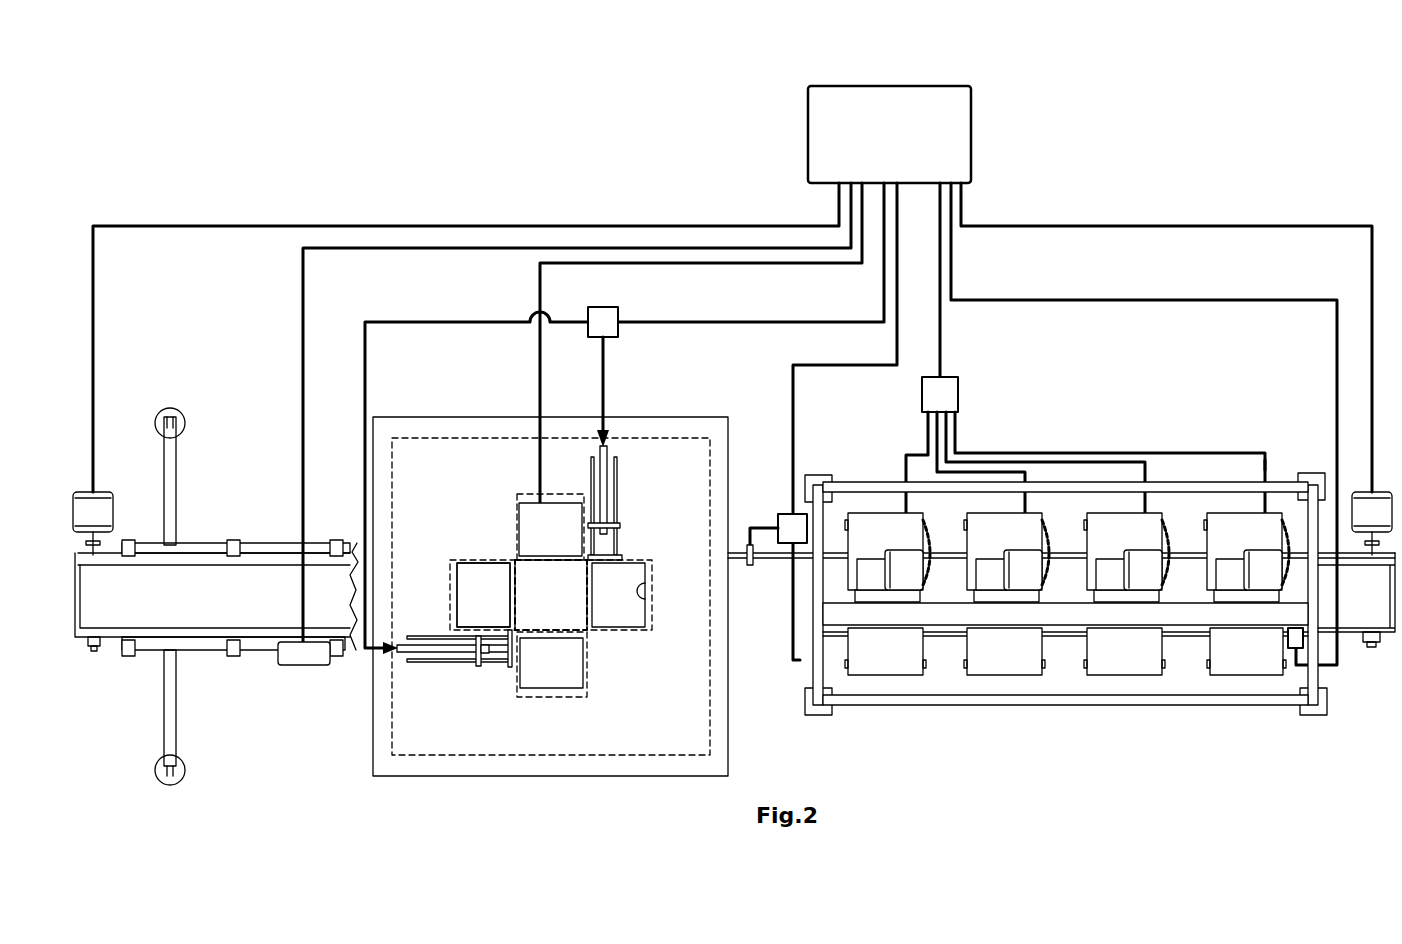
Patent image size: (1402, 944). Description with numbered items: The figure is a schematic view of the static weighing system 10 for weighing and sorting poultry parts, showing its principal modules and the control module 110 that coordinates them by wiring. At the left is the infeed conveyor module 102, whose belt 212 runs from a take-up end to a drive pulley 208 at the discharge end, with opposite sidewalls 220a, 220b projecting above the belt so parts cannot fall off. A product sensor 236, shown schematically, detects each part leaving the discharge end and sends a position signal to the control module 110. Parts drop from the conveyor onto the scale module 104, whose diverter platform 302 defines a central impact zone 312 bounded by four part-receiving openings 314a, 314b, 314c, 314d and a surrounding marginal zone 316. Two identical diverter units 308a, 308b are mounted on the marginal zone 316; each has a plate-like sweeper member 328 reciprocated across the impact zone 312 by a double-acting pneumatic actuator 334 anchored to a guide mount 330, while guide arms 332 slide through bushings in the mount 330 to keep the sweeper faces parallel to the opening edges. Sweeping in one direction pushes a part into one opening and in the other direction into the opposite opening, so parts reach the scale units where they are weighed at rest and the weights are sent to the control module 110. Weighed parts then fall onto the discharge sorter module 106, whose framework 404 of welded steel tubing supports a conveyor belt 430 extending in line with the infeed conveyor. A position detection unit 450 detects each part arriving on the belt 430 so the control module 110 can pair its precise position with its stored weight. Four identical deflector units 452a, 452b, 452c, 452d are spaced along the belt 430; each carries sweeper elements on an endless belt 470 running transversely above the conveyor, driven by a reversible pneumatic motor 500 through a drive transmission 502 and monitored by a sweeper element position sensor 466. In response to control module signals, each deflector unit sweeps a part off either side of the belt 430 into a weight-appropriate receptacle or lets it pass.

The cartridge processing system 10 is at (1022, 100).
The control module 110 is at (918, 84).
The infeed conveyor module 102 is at (213, 596).
The scale module 104 is at (526, 598).
The discharge sorter module 106 is at (1061, 573).
The drive pulley 208 is at (92, 650).
The belt 212 is at (200, 612).
The sidewall 220a is at (197, 550).
The sidewall 220b is at (148, 637).
The product sensor 236 is at (302, 665).
The diverter platform 302 is at (588, 735).
The diverter unit 308a is at (462, 663).
The diverter unit 308b is at (630, 532).
The poultry part impact zone 312 is at (551, 595).
The poultry part receiving opening 314a is at (640, 592).
The poultry part receiving opening 314b is at (470, 593).
The poultry part receiving opening 314c is at (535, 525).
The poultry part receiving opening 314d is at (548, 657).
The surrounding marginal zone 316 is at (632, 714).
The poultry part sweeper member 328 is at (508, 595).
The guide mount 330 is at (505, 666).
The guide arms 332 is at (418, 637).
The sweeper member actuator 334 is at (388, 652).
The framework 404 is at (813, 668).
The conveyor belt 430 is at (1354, 598).
The poultry part position detection unit 450 is at (778, 520).
The poultry part deflector unit 452a is at (1255, 632).
The poultry part deflector unit 452b is at (1123, 690).
The poultry part deflector unit 452c is at (1005, 690).
The poultry part deflector unit 452d is at (888, 690).
The sweeper element position sensor 466 is at (1292, 668).
The endless belt 470 is at (1246, 651).
The motor 500 is at (1092, 469).
The drive transmission 502 is at (1298, 448).